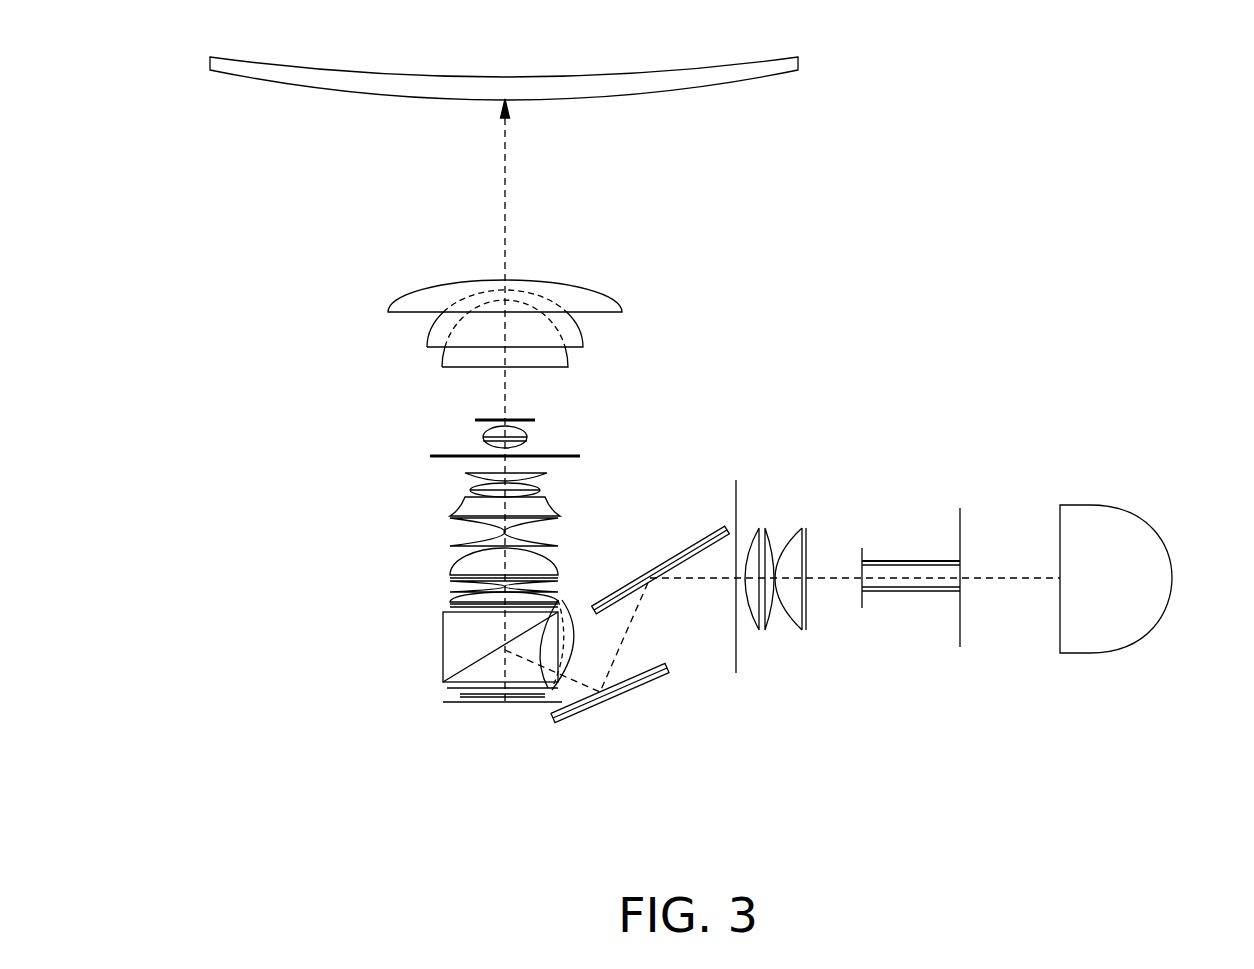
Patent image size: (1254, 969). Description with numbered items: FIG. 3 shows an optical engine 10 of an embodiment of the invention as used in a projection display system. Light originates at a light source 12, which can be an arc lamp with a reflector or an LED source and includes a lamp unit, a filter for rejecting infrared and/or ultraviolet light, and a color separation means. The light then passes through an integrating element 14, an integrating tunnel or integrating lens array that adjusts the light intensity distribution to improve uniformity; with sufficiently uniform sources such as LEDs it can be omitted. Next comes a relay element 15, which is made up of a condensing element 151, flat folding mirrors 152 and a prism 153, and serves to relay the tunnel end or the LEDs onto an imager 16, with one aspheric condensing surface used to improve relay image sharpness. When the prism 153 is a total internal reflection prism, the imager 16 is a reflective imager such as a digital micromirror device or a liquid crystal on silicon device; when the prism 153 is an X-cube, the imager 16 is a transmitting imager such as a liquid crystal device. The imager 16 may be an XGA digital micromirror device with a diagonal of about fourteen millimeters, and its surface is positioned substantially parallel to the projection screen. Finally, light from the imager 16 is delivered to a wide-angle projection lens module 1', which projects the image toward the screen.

The optical engine 10 is at (98, 58).
The wide-angle projection lens module 1' is at (479, 332).
The light source 12 is at (1108, 650).
The integrating element 14 is at (910, 593).
The relay element 15 is at (767, 818).
The condensing element 151 is at (813, 680).
The flat folding mirrors 152 is at (676, 560).
The prism 153 is at (520, 690).
The imager 16 is at (465, 703).